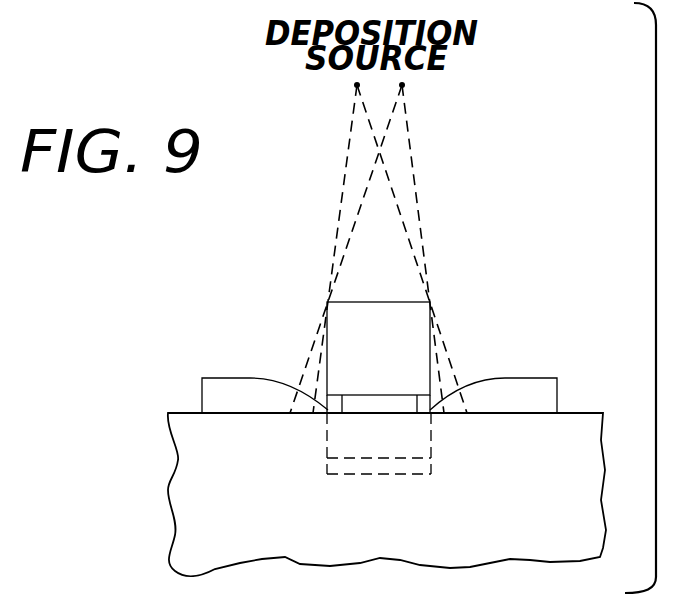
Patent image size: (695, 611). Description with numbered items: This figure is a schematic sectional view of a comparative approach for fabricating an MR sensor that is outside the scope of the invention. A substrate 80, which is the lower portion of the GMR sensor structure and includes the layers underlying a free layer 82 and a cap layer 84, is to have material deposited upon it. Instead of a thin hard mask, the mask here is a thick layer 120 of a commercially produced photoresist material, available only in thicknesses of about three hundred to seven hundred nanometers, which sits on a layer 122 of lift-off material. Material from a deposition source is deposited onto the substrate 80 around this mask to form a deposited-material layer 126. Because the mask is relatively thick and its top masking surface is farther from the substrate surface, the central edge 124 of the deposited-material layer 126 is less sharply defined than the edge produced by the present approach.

The substrate 80 is at (178, 487).
The free layer 82 is at (425, 466).
The cap layer 84 is at (417, 434).
The thick layer of photoresist material 120 is at (416, 314).
The lift-off material layer 122 is at (405, 405).
The central edge 124 is at (312, 392).
The deposited-material layer 126 is at (215, 390).